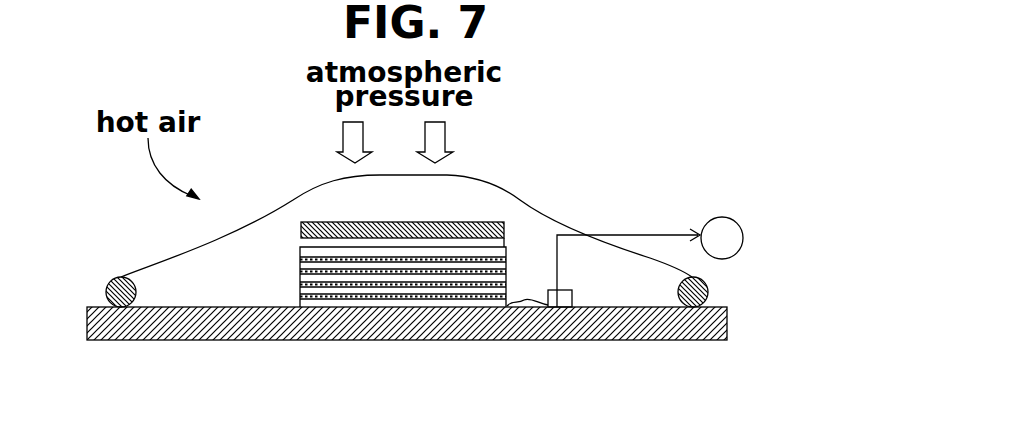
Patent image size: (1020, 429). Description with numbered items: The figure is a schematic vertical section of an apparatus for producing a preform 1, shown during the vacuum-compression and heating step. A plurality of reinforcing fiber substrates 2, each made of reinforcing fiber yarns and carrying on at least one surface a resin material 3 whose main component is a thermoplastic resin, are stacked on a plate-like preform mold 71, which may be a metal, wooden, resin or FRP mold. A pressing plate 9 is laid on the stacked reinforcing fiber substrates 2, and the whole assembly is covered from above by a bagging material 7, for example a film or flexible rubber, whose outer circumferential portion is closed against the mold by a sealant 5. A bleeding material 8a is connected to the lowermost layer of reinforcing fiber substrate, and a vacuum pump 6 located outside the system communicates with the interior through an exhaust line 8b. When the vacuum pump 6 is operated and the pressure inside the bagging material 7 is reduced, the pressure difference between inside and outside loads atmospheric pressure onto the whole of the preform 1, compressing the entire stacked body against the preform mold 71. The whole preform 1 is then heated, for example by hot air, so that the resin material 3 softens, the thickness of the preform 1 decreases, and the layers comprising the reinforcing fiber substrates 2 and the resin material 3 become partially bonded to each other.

The preform 1 is at (383, 295).
The reinforcing fiber substrate 2 is at (300, 247).
The resin material 3 is at (356, 327).
The sealant 5 is at (705, 285).
The vacuum pump 6 is at (722, 217).
The bagging material 7 is at (472, 172).
The bleeding material 8a is at (515, 318).
The exhaust line 8b is at (643, 234).
The pressing plate 9 is at (507, 234).
The preform mold 71 is at (607, 323).